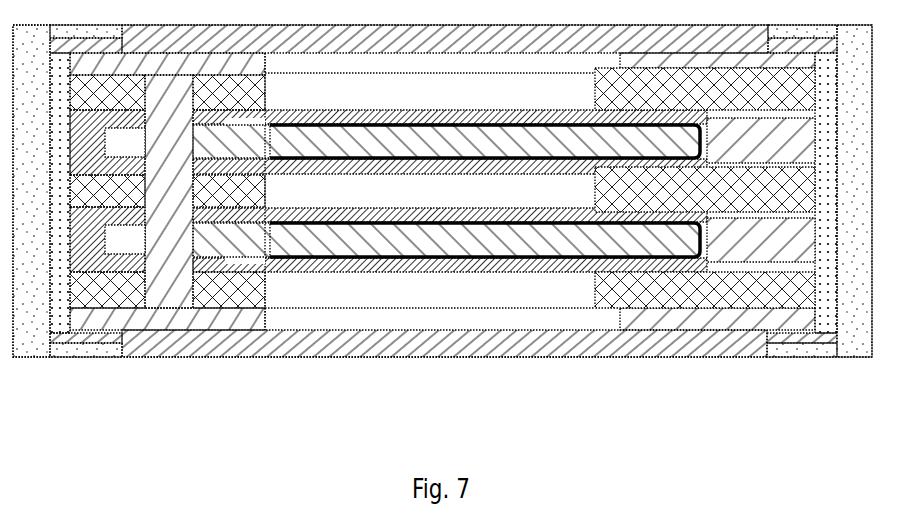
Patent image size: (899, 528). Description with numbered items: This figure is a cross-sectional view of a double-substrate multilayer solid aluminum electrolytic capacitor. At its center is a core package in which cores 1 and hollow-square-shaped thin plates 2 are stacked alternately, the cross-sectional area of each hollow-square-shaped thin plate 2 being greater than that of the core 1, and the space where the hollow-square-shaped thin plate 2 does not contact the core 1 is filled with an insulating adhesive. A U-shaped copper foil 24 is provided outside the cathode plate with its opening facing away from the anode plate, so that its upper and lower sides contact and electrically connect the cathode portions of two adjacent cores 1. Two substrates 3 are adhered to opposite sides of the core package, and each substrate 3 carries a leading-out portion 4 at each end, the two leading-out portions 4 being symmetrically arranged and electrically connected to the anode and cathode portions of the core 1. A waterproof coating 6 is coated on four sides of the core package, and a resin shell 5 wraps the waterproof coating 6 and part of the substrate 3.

The core 1 is at (507, 238).
The hollow-square-shaped thin plate 2 is at (303, 290).
The substrate 3 is at (420, 345).
The leading-out portion 4 is at (123, 343).
The resin shell 5 is at (28, 313).
The waterproof coating 6 is at (827, 314).
The U-shaped copper foil 24 is at (677, 315).